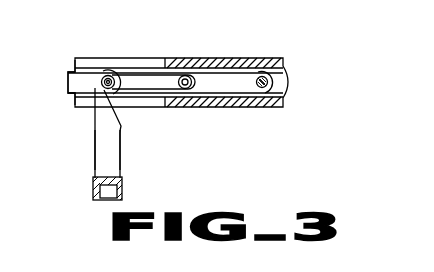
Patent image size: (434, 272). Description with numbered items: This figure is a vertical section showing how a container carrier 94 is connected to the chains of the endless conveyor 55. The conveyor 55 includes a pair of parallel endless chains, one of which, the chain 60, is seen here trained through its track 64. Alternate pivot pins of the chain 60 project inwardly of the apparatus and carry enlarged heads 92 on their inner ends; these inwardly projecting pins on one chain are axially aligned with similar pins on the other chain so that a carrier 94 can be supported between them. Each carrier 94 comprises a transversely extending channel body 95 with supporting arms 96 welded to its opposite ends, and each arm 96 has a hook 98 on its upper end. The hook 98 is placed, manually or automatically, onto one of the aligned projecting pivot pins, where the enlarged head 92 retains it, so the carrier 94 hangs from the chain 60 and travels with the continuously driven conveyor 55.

The endless conveyor 55 is at (252, 67).
The endless chain 60 is at (215, 80).
The track 64 is at (92, 62).
The enlarged head 92 is at (101, 82).
The container carrier 94 is at (128, 162).
The channel body 95 is at (93, 188).
The supporting arm 96 is at (95, 143).
The hook 98 is at (122, 72).